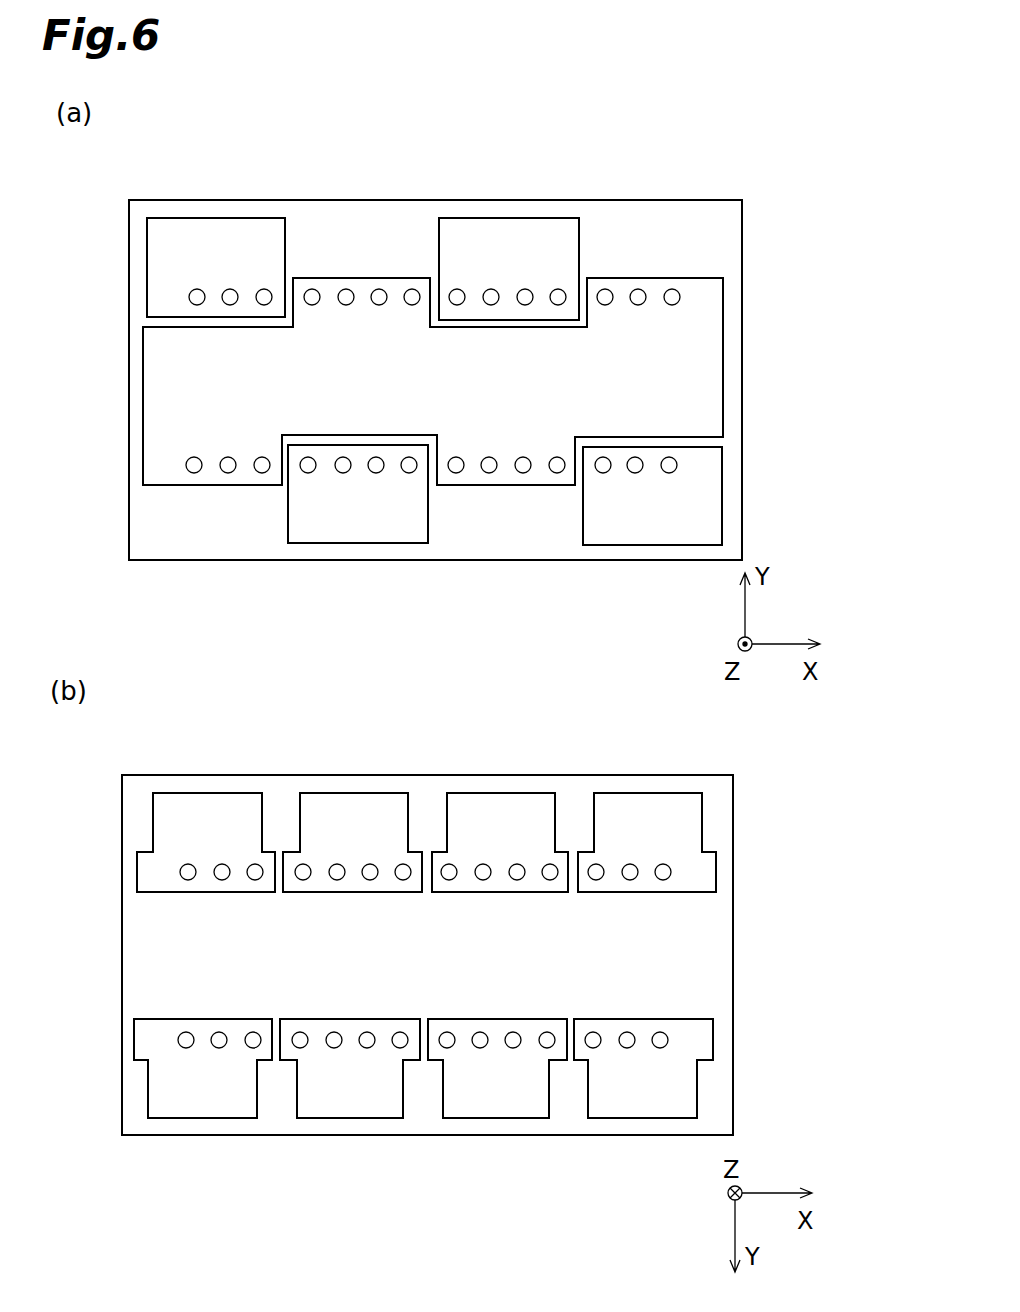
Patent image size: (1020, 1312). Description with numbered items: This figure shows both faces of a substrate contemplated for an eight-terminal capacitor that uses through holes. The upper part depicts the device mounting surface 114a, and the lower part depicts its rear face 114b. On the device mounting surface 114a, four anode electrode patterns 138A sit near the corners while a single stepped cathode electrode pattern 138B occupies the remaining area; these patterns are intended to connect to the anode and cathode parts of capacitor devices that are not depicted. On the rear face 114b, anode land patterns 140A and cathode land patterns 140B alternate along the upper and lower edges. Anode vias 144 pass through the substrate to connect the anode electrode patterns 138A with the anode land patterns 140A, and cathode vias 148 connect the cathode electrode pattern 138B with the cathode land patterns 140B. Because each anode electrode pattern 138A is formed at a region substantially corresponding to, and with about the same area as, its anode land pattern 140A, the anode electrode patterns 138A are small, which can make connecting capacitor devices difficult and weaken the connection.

The device mounting surface 114a is at (732, 220).
The rear face 114b is at (722, 793).
The anode electrode pattern 138A is at (210, 235).
The cathode electrode pattern 138B is at (706, 382).
The anode land pattern 140A is at (357, 807).
The cathode land pattern 140B is at (205, 807).
The anode via 144 is at (197, 289).
The cathode via 148 is at (312, 305).